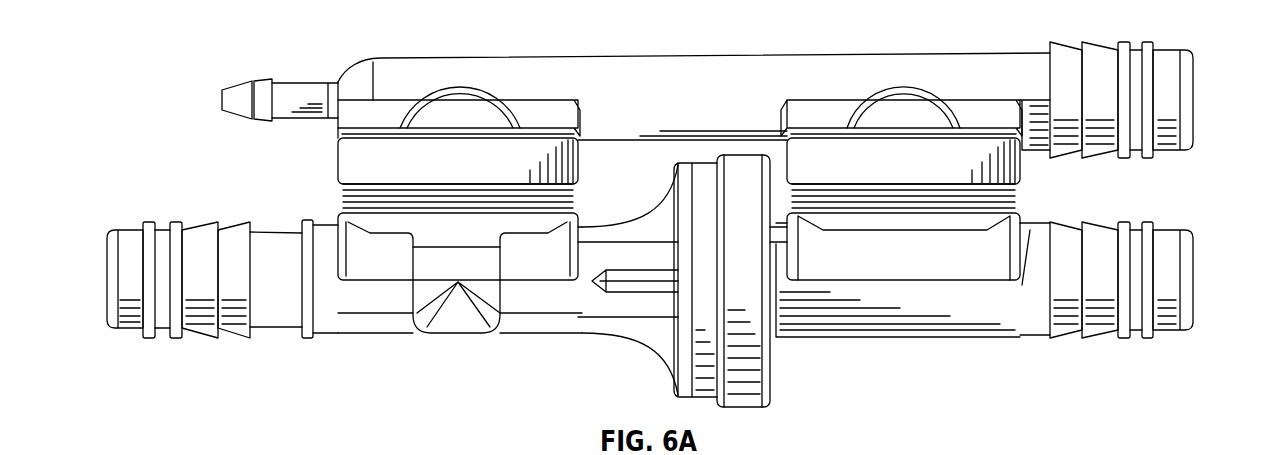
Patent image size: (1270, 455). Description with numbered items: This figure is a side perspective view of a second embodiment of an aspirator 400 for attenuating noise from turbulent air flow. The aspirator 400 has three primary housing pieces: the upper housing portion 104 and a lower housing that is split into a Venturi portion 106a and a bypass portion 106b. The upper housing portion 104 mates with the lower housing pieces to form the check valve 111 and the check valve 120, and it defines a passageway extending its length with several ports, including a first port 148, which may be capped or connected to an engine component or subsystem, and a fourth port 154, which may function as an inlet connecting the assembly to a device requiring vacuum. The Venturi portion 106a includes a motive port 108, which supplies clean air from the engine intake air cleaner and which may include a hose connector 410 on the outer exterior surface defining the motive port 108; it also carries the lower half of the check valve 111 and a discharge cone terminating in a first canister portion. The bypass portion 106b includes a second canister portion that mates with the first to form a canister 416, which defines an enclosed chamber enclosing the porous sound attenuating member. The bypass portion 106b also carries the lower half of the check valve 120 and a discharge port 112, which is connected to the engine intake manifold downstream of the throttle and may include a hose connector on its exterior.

The aspirator 400 is at (915, 46).
The upper housing portion 104 is at (548, 60).
The first port 148 is at (222, 98).
The check valve 111 is at (328, 182).
The check valve 120 is at (1032, 190).
The motive port 108 is at (108, 310).
The hose connector 410 is at (248, 213).
The Venturi portion 106a is at (400, 320).
The bypass portion 106b is at (955, 335).
The canister 416 is at (765, 374).
The fourth port 154 is at (1183, 84).
The discharge port 112 is at (1183, 282).